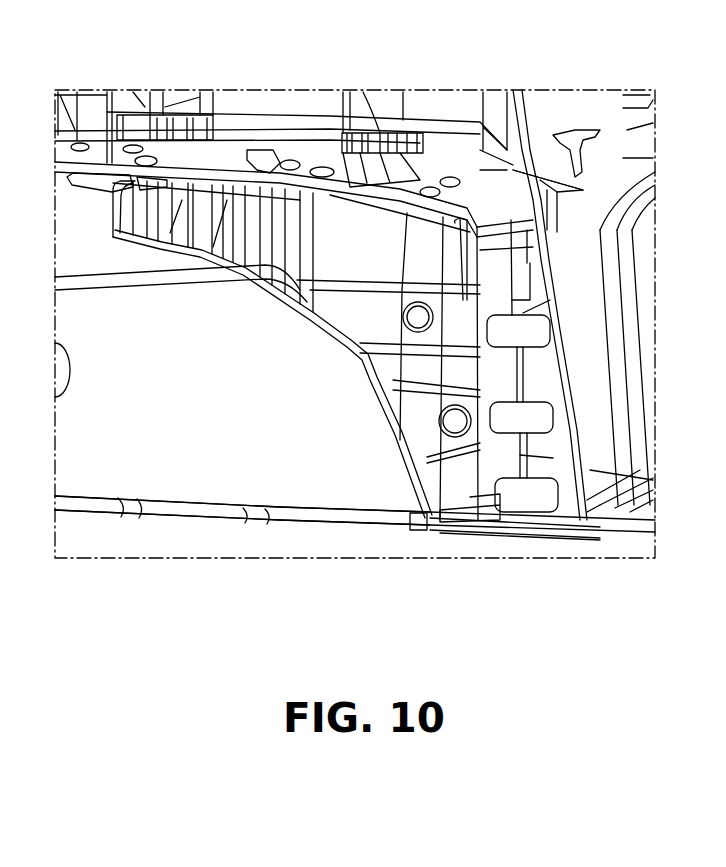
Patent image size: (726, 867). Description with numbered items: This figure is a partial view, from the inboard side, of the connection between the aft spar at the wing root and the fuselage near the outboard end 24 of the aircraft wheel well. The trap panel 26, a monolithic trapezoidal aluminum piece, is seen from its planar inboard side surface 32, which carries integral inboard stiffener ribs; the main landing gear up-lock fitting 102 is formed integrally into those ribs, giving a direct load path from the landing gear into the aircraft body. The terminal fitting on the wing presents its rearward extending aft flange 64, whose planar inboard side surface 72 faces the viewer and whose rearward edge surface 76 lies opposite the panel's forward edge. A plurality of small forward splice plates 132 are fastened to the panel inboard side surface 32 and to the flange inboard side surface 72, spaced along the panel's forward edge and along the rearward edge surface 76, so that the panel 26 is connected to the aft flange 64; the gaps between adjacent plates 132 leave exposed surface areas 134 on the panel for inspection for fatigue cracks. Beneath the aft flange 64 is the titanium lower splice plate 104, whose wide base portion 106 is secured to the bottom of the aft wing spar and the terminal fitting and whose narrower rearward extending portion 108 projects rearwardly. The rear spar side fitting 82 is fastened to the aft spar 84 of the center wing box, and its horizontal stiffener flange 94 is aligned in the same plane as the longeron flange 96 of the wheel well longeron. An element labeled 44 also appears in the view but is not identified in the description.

The outboard end of the aircraft wheel well 24 is at (337, 411).
The trap panel 26 is at (313, 324).
The inboard side surface 32 is at (510, 490).
The upper rail ribs 44 is at (292, 185).
The aft flange 64 is at (552, 453).
The inboard side surface 72 is at (543, 382).
The rearward edge surface 76 is at (512, 386).
The side fitting 82 is at (580, 232).
The aft spar of the center wing box 84 is at (594, 495).
The stiffener flange 94 is at (562, 234).
The longeron flange 96 is at (468, 192).
The up-lock fitting 102 is at (172, 197).
The lower splice plate 104 is at (543, 548).
The base portion 106 is at (628, 544).
The rearward extending portion 108 is at (427, 525).
The small forward splice plates 132 is at (553, 326).
The exposed surface areas 134 is at (553, 457).